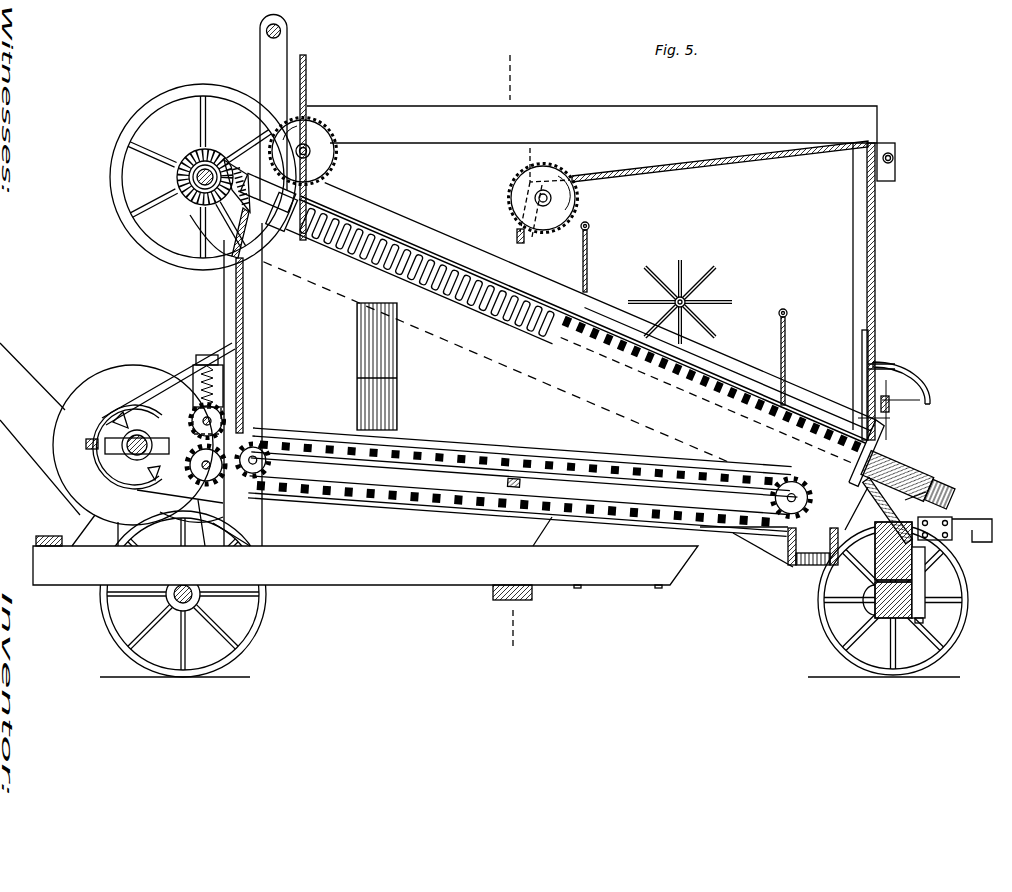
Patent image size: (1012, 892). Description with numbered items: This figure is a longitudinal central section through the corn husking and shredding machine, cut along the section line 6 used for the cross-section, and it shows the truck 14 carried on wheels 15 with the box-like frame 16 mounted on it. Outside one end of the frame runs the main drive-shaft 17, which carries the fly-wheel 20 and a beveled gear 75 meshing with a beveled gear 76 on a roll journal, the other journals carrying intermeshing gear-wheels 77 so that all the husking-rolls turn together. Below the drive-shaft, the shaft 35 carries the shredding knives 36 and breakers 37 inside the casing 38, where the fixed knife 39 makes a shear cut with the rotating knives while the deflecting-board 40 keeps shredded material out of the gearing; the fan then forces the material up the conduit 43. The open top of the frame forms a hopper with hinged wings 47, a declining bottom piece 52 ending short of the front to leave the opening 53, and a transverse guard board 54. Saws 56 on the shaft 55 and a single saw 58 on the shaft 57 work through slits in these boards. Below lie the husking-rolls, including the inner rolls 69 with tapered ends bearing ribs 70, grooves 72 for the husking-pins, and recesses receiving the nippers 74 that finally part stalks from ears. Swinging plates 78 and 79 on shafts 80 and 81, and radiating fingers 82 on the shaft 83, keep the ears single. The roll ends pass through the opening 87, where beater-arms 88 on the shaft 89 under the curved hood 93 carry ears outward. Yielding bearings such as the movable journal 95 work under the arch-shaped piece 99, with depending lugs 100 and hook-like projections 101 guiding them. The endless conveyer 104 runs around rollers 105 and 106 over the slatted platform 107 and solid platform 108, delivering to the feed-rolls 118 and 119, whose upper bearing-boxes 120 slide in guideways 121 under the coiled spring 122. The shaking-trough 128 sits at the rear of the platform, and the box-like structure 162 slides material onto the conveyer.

The section line 6 6 is at (512, 352).
The truck 14 is at (427, 580).
The wheels 15 is at (260, 625).
The frame 16 is at (845, 240).
The main drive-shaft 17 is at (192, 195).
The fly-wheel 20 is at (160, 250).
The shaft 35 is at (135, 455).
The cutting or shredding knives 36 is at (162, 425).
The breakers 37 is at (116, 418).
The casing 38 is at (96, 458).
The fixed knife or shredder 39 is at (200, 505).
The guard or deflecting-board 40 is at (167, 377).
The conduit 43 is at (20, 352).
The wings 47 is at (602, 106).
The bottom piece 52 is at (688, 160).
The opening 53 is at (438, 150).
The transverse board 54 is at (524, 242).
The transverse shaft 55 is at (545, 208).
The saws 56 is at (510, 193).
The transverse shaft 57 is at (310, 148).
The saw 58 is at (325, 163).
The inner rolls 69 is at (495, 318).
The annular beads or ribs 70 is at (323, 238).
The elongated grooves or recesses 72 is at (428, 290).
The nippers 74 is at (432, 255).
The beveled gear 75 is at (188, 152).
The beveled gear 76 is at (237, 212).
The intermeshing gear-wheels 77 is at (938, 476).
The swinging plate 78 is at (587, 265).
The swinging plate 79 is at (785, 346).
The transverse shaft 80 is at (589, 226).
The transverse shaft 81 is at (787, 312).
The radiating fingers 82 is at (714, 270).
The shaft 83 is at (690, 308).
The opening 87 is at (878, 438).
The beater-arms 88 is at (918, 385).
The transverse shaft 89 is at (891, 410).
The curved hood 93 is at (888, 363).
The movable journal 95 is at (296, 230).
The arch-shaped piece 99 is at (265, 180).
The depending lugs 100 is at (278, 222).
The hook-like projections 101 is at (878, 490).
The endless conveyer 104 is at (462, 450).
The roller 105 is at (275, 466).
The roller 106 is at (805, 498).
The slatted platform 107 is at (572, 466).
The solid platform or flooring 108 is at (462, 500).
The feed-roll 118 is at (222, 455).
The feed-roll 119 is at (228, 410).
The bearing-boxes 120 is at (222, 418).
The guideways 121 is at (197, 368).
The coiled spring 122 is at (215, 385).
The shaking-trough 128 is at (790, 545).
The box-like structure 162 is at (388, 395).